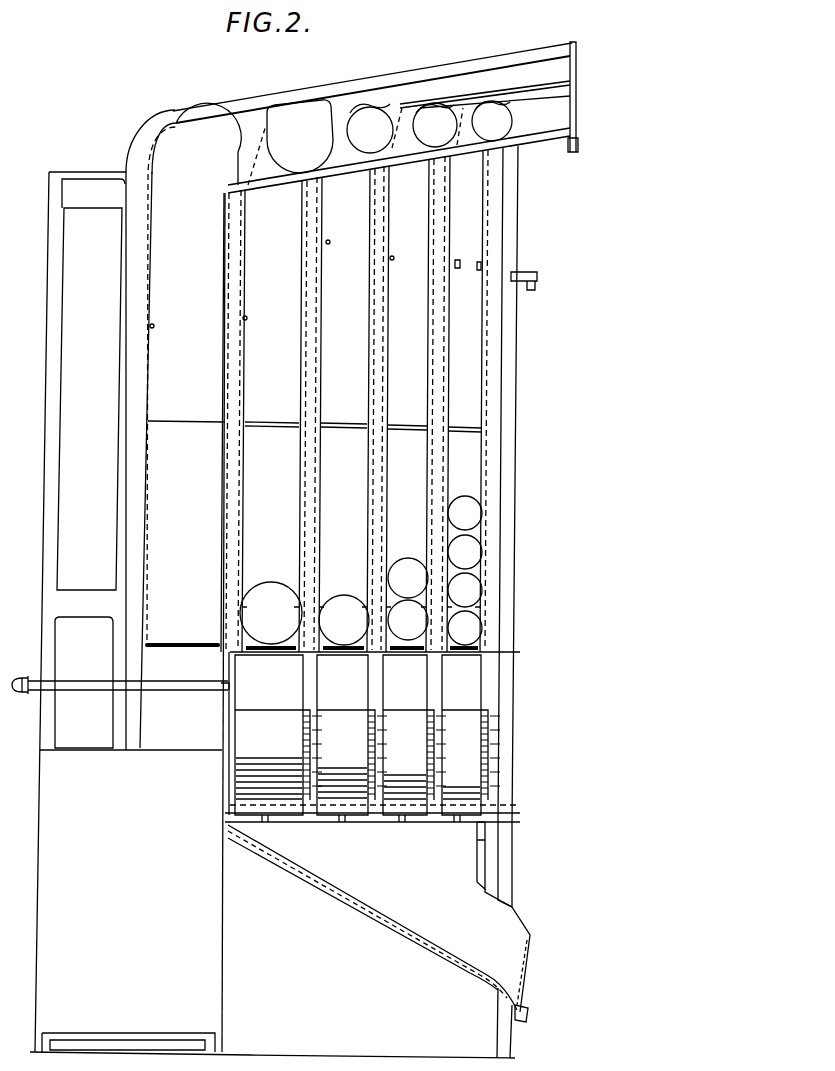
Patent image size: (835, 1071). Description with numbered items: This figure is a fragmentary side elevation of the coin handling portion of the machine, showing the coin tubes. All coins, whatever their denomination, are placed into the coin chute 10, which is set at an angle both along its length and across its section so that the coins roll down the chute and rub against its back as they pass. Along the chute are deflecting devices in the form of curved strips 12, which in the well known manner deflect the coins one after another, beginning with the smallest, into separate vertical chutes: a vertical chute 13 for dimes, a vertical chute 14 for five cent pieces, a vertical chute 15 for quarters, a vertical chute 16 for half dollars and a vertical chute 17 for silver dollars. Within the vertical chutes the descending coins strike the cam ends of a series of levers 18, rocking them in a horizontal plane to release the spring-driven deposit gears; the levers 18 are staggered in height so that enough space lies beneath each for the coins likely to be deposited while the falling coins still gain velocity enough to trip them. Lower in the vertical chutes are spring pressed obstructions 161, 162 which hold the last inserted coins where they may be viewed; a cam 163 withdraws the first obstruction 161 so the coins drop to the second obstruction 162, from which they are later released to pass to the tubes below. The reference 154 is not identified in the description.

The coin chute 10 is at (556, 112).
The curved strips 12 is at (356, 124).
The vertical chute for dimes 13 is at (465, 401).
The vertical chute for five cent pieces 14 is at (418, 404).
The vertical chute for quarters 15 is at (354, 409).
The vertical chute for half dollars 16 is at (271, 414).
The vertical chute for silver dollars 17 is at (190, 425).
The levers 18 is at (404, 256).
The top rail 154 is at (578, 76).
The obstruction 161 is at (176, 422).
The obstruction 162 is at (238, 650).
The cam 163 is at (374, 737).